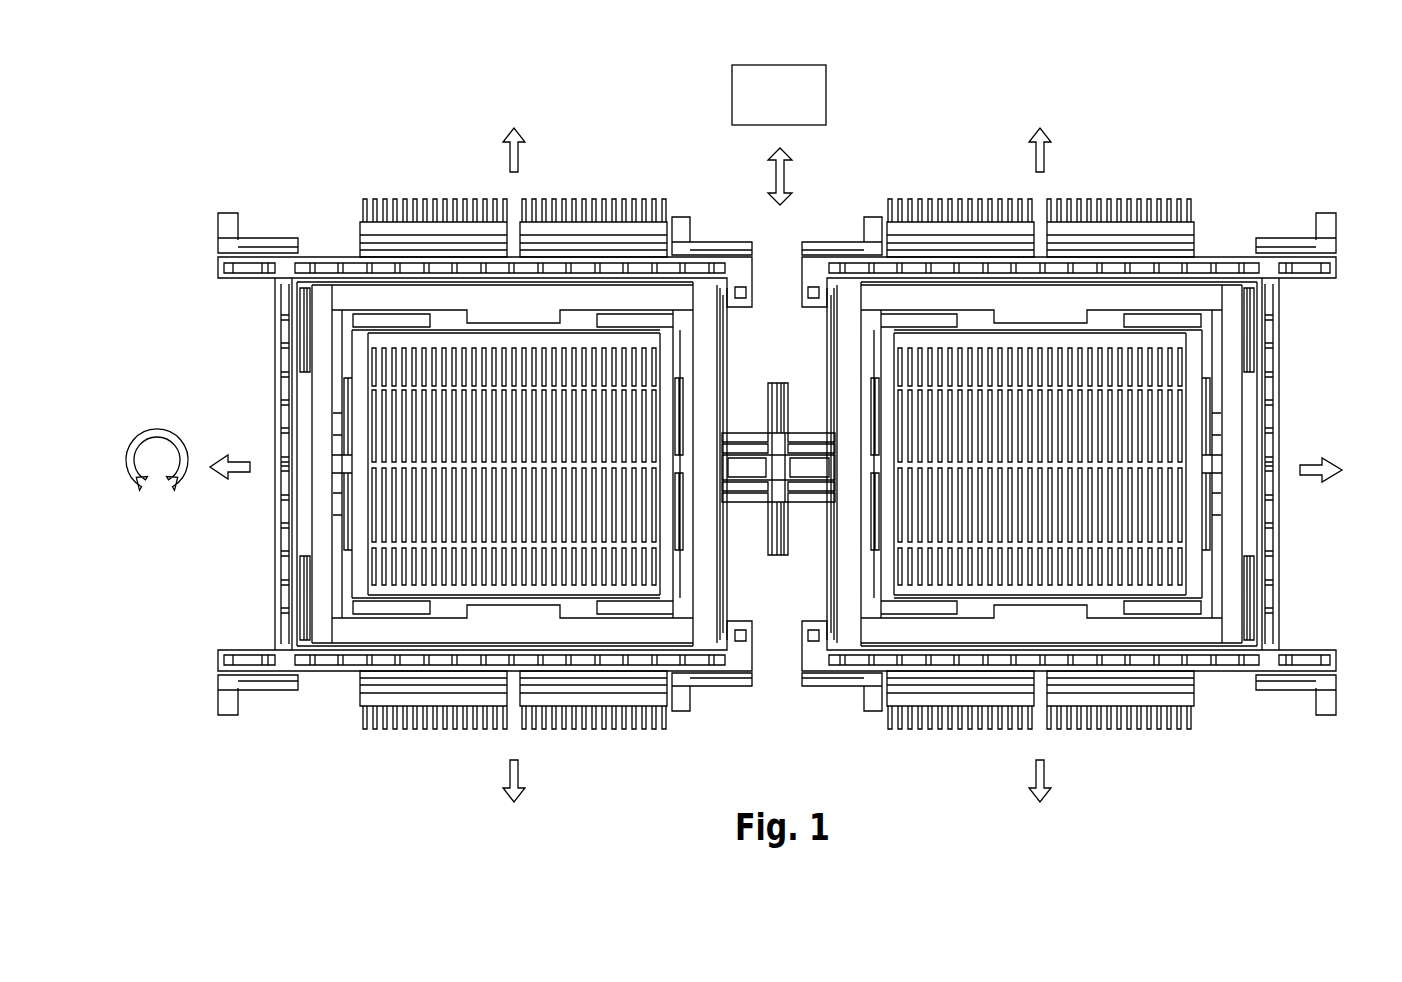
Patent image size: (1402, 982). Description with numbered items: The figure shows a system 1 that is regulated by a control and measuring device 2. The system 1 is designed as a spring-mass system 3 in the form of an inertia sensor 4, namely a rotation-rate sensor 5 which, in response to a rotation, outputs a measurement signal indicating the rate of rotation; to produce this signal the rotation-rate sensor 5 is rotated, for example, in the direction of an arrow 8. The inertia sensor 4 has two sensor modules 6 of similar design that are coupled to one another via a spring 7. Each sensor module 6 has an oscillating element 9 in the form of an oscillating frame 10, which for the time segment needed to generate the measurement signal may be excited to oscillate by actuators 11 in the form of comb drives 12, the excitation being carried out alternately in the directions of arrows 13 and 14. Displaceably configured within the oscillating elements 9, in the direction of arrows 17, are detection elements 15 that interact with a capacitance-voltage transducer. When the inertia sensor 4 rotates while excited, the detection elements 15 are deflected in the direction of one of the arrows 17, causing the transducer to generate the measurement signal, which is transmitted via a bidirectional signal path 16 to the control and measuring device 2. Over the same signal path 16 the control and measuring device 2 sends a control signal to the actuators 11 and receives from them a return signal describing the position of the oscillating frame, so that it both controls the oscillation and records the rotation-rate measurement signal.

The system 1 is at (284, 125).
The control and measuring device 2 is at (800, 93).
The spring-mass system 3 is at (744, 433).
The inertia sensor 4 is at (744, 433).
The rotation-rate sensor 5 is at (744, 433).
The sensor module 6 is at (1242, 211).
The spring 7 is at (780, 578).
The arrow 8 is at (157, 438).
The oscillating element 9 is at (777, 464).
The oscillating frame 10 is at (245, 280).
The actuator 11 is at (781, 465).
The comb drive 12 is at (451, 207).
The arrow 13 is at (520, 160).
The arrow 14 is at (506, 775).
The detection element 15 is at (352, 433).
The signal path 16 is at (788, 176).
The arrow 17 is at (238, 480).